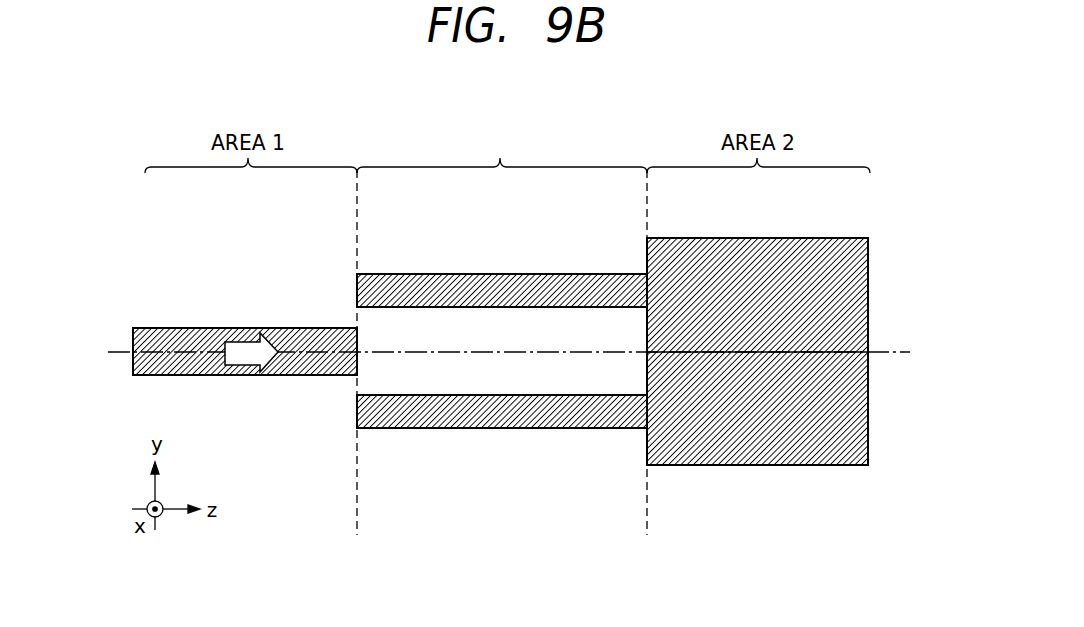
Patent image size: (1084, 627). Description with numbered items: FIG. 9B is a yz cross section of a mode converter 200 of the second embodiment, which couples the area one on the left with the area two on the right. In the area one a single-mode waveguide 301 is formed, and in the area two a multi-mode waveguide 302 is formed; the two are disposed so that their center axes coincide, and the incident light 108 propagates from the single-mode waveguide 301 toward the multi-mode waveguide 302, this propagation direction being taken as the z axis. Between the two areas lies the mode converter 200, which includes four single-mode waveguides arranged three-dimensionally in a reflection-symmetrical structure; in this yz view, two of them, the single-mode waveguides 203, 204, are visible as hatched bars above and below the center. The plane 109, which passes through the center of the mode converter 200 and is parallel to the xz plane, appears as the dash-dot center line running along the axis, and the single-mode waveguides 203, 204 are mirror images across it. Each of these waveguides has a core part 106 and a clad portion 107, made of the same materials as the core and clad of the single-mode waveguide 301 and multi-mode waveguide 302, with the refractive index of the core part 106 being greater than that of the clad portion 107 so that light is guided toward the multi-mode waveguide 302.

The mode converter 200 is at (500, 157).
The single-mode waveguide 203 is at (478, 274).
The single-mode waveguide 204 is at (475, 430).
The core part 106 is at (450, 400).
The clad portion 107 is at (388, 482).
The incident light 108 is at (245, 357).
The plane 109 is at (883, 355).
The single-mode waveguide 301 is at (188, 328).
The multi-mode waveguide 302 is at (778, 238).